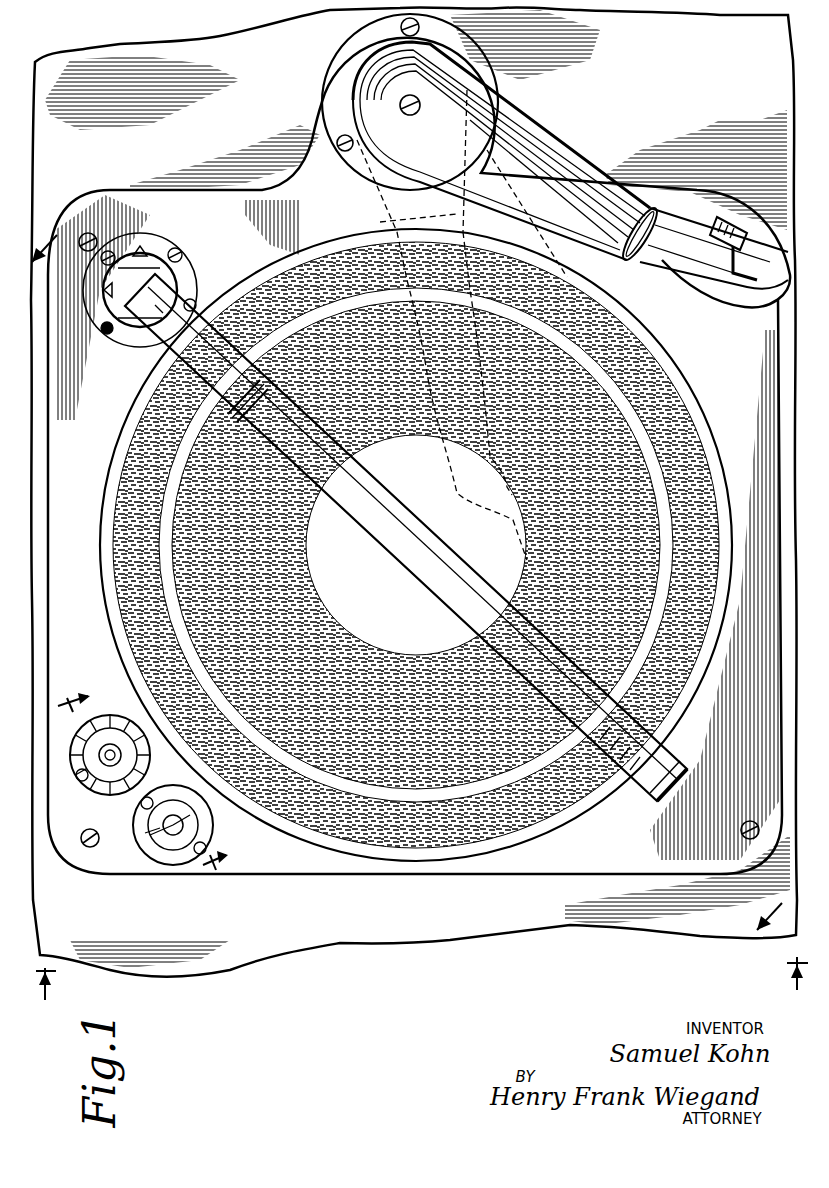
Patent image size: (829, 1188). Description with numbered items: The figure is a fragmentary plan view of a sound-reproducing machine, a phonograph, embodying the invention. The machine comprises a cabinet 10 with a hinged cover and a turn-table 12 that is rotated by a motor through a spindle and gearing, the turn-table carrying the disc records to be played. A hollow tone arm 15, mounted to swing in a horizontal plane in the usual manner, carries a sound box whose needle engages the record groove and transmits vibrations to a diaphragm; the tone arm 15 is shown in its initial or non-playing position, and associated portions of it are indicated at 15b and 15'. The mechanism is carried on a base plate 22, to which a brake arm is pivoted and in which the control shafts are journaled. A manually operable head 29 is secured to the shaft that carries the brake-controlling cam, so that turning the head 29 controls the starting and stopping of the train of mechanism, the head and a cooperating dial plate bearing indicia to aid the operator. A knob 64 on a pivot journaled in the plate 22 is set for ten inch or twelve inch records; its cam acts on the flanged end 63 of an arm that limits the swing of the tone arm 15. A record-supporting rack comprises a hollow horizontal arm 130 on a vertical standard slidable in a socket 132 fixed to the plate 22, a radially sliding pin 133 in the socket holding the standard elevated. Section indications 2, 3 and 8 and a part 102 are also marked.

The section line 2- 2 is at (407, 581).
The section line 3- 3 is at (418, 974).
The section arrow 8 is at (138, 786).
The cabinet 10 is at (195, 799).
The turn-table 12 is at (565, 817).
The tone arm 15 is at (570, 165).
The tone arm pivot base 15b is at (337, 162).
The tone arm lower portion 15' is at (552, 249).
The base plate 22 is at (460, 868).
The manually operable head 29 is at (110, 715).
The flanged end 63 is at (170, 787).
The knob 64 is at (145, 833).
The control knob 102 is at (182, 278).
The hollow horizontal arm 130 is at (413, 515).
The socket 132 is at (150, 245).
The pin 133 is at (108, 336).